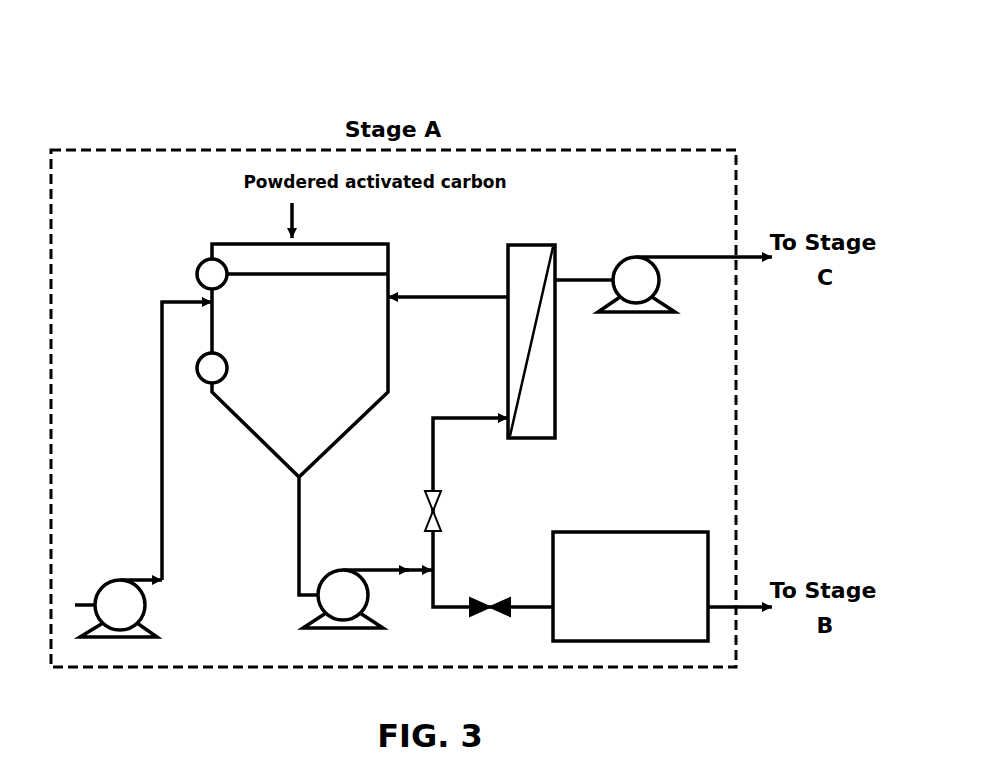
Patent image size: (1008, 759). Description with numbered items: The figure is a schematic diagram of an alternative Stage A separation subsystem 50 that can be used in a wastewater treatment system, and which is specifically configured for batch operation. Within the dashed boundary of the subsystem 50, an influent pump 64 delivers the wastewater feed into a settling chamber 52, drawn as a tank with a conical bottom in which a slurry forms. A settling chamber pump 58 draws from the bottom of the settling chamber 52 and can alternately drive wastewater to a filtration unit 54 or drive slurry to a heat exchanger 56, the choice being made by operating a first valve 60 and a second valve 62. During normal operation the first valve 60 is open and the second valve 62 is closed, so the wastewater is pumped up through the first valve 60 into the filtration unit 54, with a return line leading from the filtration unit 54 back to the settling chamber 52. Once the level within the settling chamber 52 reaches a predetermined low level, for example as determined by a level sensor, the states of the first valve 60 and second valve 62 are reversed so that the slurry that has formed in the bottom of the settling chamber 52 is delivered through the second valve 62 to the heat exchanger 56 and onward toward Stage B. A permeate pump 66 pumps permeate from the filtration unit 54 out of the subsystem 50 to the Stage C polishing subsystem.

The separation subsystem 50 is at (772, 120).
The settling chamber 52 is at (292, 360).
The filtration unit 54 is at (578, 421).
The heat exchanger 56 is at (630, 586).
The settling chamber pump 58 is at (350, 558).
The first valve 60 is at (452, 510).
The second valve 62 is at (492, 586).
The influent pump 64 is at (113, 566).
The permeate pump 66 is at (628, 246).